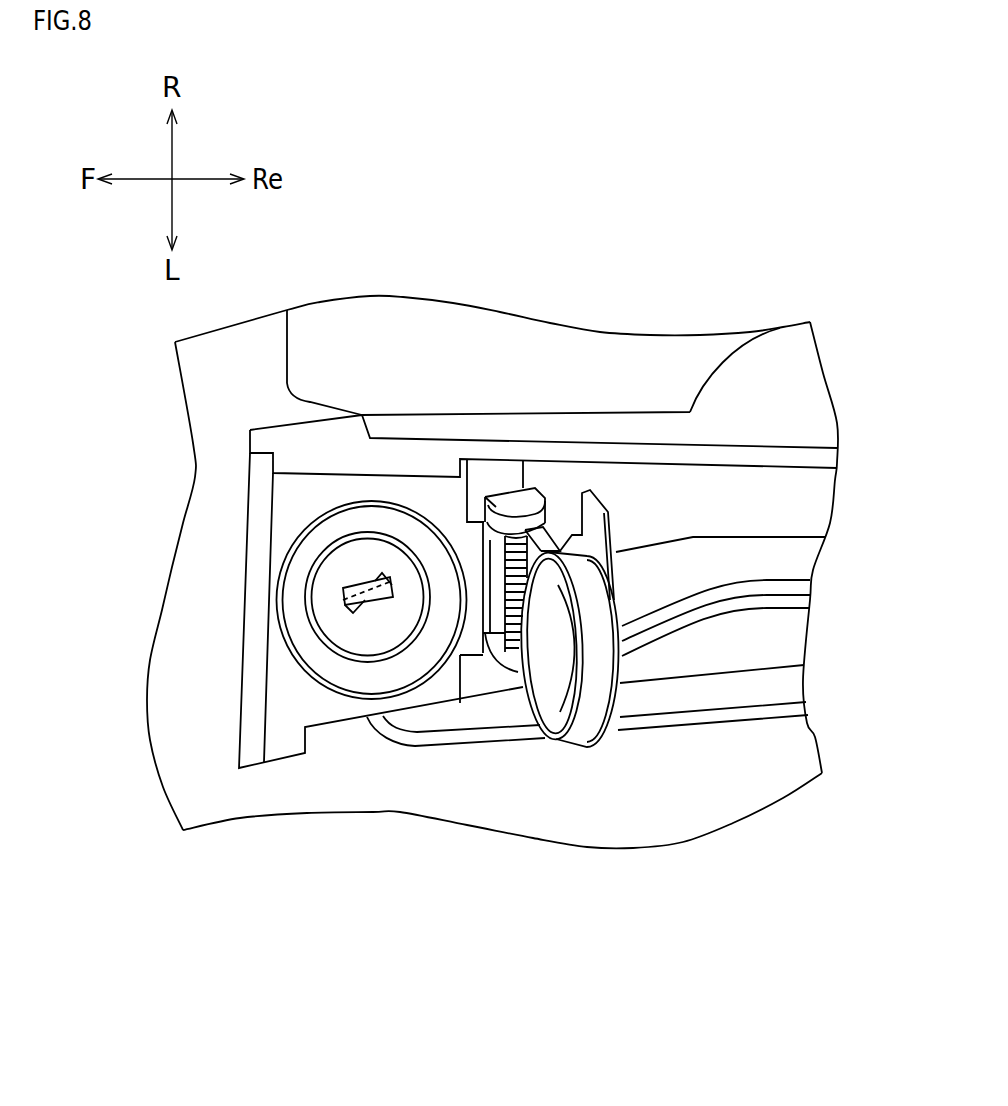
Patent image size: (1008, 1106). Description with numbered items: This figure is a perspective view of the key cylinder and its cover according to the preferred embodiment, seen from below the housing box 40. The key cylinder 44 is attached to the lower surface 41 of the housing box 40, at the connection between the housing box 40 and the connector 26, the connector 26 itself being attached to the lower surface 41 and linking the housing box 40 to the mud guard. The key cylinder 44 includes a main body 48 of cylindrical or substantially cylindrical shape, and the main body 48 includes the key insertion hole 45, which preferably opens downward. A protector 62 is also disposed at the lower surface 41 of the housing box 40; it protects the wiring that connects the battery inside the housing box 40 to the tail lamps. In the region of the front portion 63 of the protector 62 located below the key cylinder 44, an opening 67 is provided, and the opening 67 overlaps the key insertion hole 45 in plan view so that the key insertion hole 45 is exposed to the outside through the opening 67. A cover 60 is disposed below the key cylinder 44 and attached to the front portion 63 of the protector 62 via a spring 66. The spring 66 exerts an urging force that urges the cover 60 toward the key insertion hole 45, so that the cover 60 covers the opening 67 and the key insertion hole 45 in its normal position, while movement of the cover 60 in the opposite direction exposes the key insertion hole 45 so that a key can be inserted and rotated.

The connector 26 is at (712, 728).
The housing box 40 is at (236, 798).
The lower surface 41 is at (427, 787).
The key cylinder 44 is at (412, 442).
The key insertion hole 45 is at (357, 586).
The main body 48 is at (398, 572).
The cover 60 is at (566, 745).
The protector 62 is at (846, 499).
The front portion 63 is at (291, 512).
The spring 66 is at (488, 503).
The opening 67 is at (312, 600).